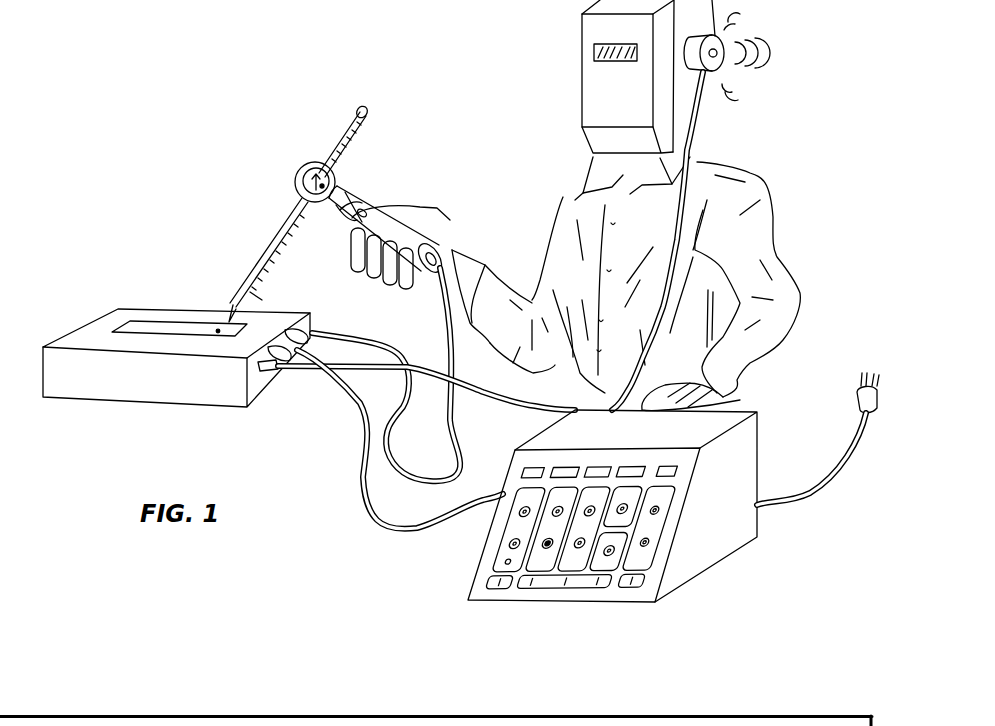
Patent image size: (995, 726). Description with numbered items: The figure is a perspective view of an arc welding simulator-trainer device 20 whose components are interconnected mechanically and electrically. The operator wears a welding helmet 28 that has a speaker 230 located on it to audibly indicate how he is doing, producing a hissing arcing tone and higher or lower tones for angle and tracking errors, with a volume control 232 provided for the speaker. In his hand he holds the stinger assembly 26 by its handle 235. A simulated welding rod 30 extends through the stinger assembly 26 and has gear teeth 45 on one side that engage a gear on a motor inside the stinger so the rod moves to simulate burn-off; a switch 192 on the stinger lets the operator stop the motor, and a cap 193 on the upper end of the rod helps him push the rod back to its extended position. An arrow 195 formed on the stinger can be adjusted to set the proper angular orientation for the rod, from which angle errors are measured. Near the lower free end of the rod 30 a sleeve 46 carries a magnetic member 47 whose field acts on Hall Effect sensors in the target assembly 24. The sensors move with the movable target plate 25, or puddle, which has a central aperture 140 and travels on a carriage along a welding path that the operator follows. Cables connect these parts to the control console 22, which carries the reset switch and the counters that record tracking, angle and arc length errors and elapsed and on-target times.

The arc welding simulator-trainer device 20 is at (262, 565).
The control console 22 is at (560, 600).
The target assembly 24 is at (130, 303).
The target plate 25 is at (192, 335).
The stinger assembly 26 is at (348, 190).
The welding helmet 28 is at (577, 33).
The simulated welding rod 30 is at (350, 150).
The gear teeth 45 is at (281, 235).
The sleeve 46 is at (242, 294).
The magnetic member 47 is at (226, 318).
The aperture 140 is at (218, 336).
The switch 192 is at (372, 211).
The cap 193 is at (367, 112).
The arrow 195 is at (306, 178).
The speaker 230 is at (724, 45).
The volume control 232 is at (726, 55).
The handle 235 is at (440, 245).